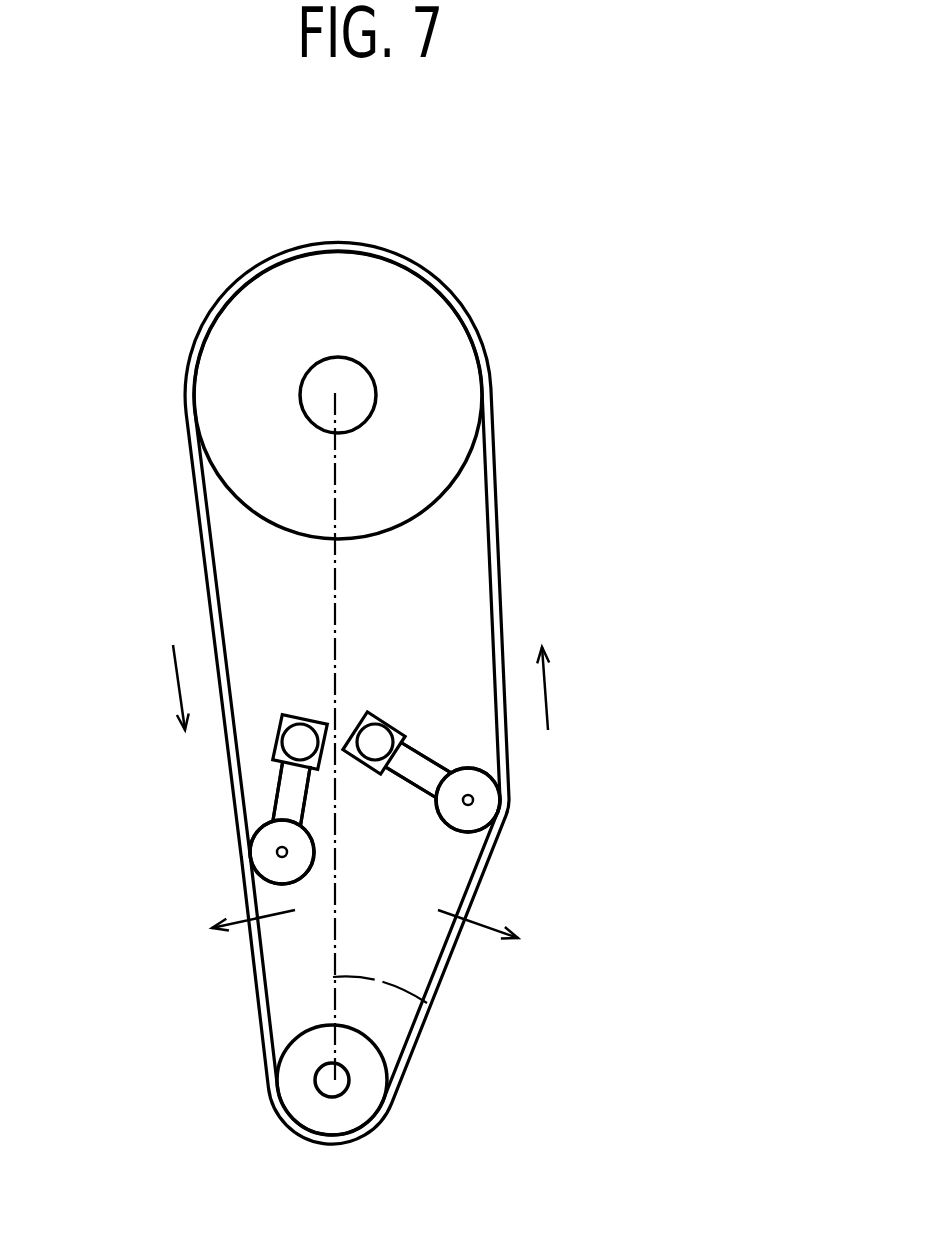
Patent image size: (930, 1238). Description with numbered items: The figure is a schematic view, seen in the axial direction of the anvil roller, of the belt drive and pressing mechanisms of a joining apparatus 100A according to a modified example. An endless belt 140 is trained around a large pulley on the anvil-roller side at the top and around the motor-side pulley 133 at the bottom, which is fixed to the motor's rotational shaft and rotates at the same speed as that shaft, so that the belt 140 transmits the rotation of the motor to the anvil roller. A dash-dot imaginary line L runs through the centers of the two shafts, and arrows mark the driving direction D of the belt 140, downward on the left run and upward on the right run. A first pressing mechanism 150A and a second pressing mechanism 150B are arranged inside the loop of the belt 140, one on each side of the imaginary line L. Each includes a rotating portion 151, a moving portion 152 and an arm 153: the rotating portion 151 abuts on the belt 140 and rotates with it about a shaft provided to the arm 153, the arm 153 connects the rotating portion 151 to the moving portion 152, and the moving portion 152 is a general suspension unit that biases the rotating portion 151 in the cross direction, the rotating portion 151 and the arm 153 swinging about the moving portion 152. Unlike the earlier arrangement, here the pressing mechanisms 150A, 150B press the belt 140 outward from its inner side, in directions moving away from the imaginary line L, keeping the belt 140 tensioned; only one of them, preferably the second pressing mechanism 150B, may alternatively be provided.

The joining apparatus 100A is at (563, 303).
The belt 140 is at (197, 518).
The motor-side pulley 133 is at (365, 1090).
The first pressing mechanism 150A is at (413, 700).
The second pressing mechanism 150B is at (270, 765).
The rotating portion 151 is at (267, 867).
The moving portion 152 is at (303, 730).
The arm 153 is at (283, 790).
The imaginary line L is at (427, 1003).
The driving direction D is at (177, 680).